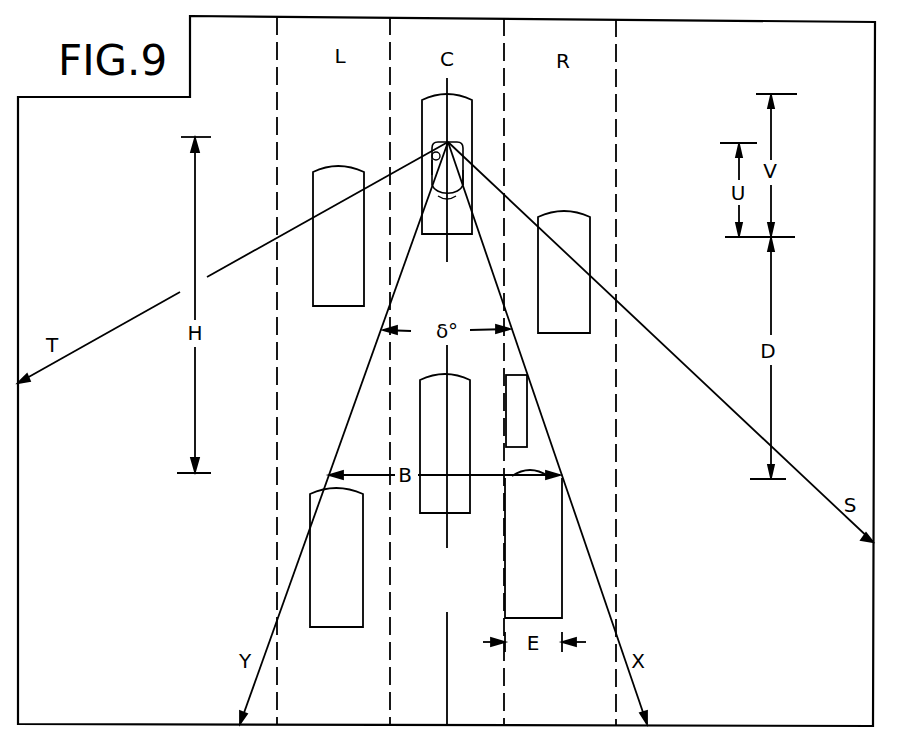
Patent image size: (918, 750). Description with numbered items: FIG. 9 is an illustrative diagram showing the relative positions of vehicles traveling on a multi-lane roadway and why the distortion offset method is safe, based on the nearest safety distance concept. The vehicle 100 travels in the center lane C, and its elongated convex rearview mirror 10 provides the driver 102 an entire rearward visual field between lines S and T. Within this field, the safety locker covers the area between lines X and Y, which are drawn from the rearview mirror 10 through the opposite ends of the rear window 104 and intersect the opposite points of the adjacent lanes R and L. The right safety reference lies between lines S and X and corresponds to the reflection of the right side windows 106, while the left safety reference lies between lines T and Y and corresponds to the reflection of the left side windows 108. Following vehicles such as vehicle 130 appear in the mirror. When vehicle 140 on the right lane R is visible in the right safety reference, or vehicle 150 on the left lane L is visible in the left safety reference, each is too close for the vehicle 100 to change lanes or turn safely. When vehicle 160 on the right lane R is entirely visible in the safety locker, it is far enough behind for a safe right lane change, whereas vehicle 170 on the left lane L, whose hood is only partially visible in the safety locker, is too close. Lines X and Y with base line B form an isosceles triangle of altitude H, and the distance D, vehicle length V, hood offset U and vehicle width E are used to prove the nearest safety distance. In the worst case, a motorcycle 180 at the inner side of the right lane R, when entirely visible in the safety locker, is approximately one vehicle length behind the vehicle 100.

The elongated convex rearview mirror 10 is at (450, 141).
The vehicle 100 is at (427, 124).
The driver 102 is at (430, 154).
The rear window 104 is at (462, 197).
The right side windows 106 is at (467, 177).
The left side windows 108 is at (427, 168).
The vehicle 130 is at (425, 507).
The vehicle 140 is at (543, 291).
The vehicle 150 is at (318, 248).
The vehicle 160 is at (555, 557).
The vehicle 170 is at (315, 574).
The motorcycle 180 is at (520, 390).